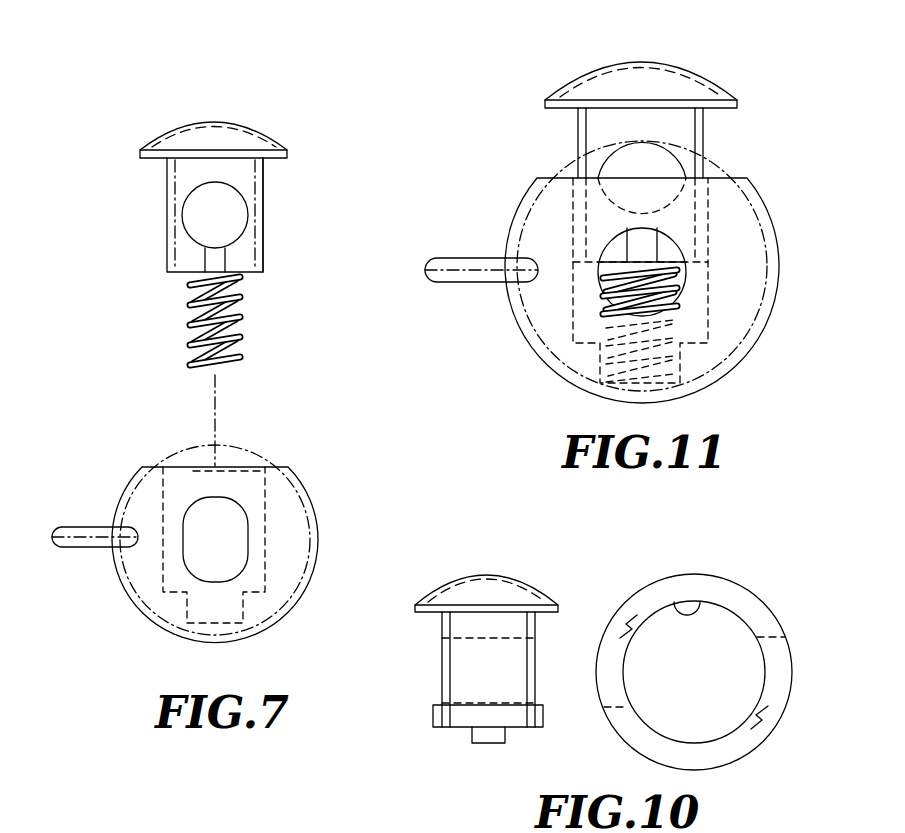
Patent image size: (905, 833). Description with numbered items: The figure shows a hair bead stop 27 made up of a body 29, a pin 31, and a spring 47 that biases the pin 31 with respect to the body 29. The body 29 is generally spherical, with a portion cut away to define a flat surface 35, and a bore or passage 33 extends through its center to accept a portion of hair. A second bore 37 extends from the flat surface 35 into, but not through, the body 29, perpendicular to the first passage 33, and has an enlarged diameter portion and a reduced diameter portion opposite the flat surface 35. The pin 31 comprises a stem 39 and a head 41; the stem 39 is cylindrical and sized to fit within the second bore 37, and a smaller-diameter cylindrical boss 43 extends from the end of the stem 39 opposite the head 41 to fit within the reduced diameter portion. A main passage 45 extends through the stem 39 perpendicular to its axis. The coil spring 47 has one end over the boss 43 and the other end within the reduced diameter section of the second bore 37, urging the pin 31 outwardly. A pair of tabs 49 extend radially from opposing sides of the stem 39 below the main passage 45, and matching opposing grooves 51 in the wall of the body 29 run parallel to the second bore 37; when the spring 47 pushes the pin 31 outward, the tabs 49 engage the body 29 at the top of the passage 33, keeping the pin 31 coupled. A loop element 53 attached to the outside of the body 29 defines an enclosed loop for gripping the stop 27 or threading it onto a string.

In FIG. 7, the hair bead stop 27 is at (358, 487).
In FIG. 11, the hair bead stop 27 is at (742, 381).
In FIG. 7, the body 29 is at (312, 540).
In FIG. 11, the body 29 is at (726, 228).
In FIG. 10, the body 29 is at (737, 570).
In FIG. 7, the pin 31 is at (264, 198).
In FIG. 11, the pin 31 is at (690, 130).
In FIG. 10, the pin 31 is at (462, 673).
In FIG. 7, the bore or passage 33 is at (240, 557).
In FIG. 10, the bore or passage 33 is at (785, 640).
In FIG. 7, the flat surface 35 is at (262, 467).
In FIG. 10, the flat surface 35 is at (700, 757).
In FIG. 7, the second bore 37 is at (295, 470).
In FIG. 11, the second bore 37 is at (735, 318).
In FIG. 10, the second bore 37 is at (695, 604).
In FIG. 7, the stem 39 is at (264, 247).
In FIG. 7, the head 41 is at (243, 132).
In FIG. 11, the head 41 is at (672, 88).
In FIG. 10, the head 41 is at (490, 590).
In FIG. 7, the boss 43 is at (188, 290).
In FIG. 10, the boss 43 is at (490, 737).
In FIG. 7, the main passage 45 is at (198, 214).
In FIG. 11, the main passage 45 is at (640, 170).
In FIG. 10, the main passage 45 is at (525, 668).
In FIG. 7, the spring 47 is at (245, 316).
In FIG. 11, the spring 47 is at (640, 292).
In FIG. 7, the tabs 49 is at (212, 262).
In FIG. 11, the tabs 49 is at (640, 250).
In FIG. 10, the tabs 49 is at (545, 713).
In FIG. 11, the grooves 51 is at (583, 228).
In FIG. 10, the grooves 51 is at (625, 614).
In FIG. 7, the loop element 53 is at (68, 546).
In FIG. 11, the loop element 53 is at (466, 270).